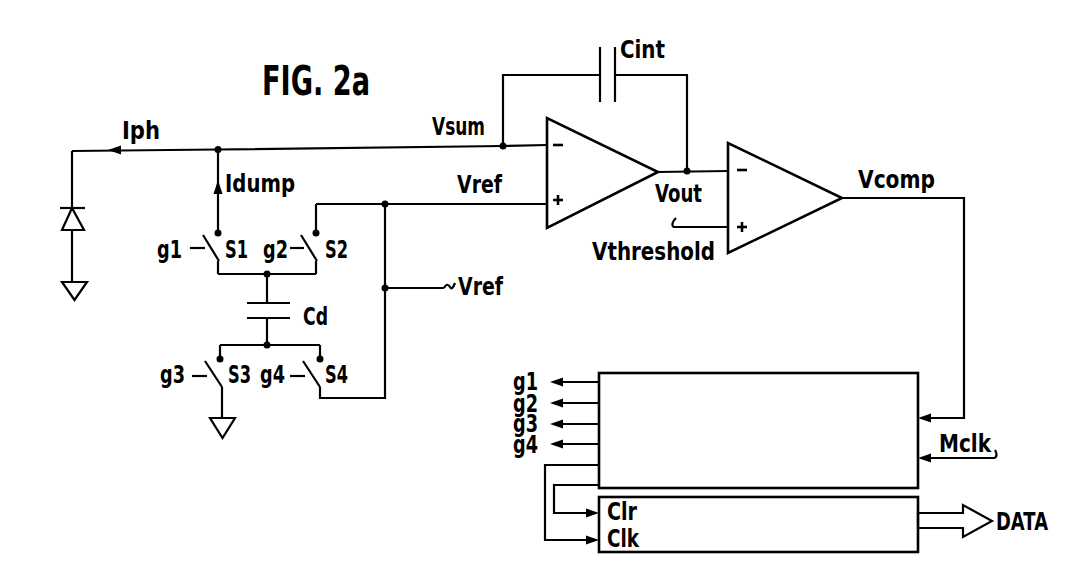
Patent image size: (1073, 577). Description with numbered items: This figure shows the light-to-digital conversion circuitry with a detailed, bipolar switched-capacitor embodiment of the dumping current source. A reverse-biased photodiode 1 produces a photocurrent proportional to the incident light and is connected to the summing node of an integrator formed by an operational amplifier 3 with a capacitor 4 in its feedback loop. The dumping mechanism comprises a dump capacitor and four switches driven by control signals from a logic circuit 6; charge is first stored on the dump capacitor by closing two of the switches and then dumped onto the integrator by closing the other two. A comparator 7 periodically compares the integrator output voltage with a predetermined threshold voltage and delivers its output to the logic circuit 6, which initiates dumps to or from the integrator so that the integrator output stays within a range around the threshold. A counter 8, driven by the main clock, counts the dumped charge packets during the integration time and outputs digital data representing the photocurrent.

The photodiode 1 is at (85, 213).
The operational amplifier 3 is at (595, 140).
The capacitor 4 is at (598, 58).
The logic circuit 6 is at (727, 373).
The comparator 7 is at (767, 162).
The counter 8 is at (770, 552).